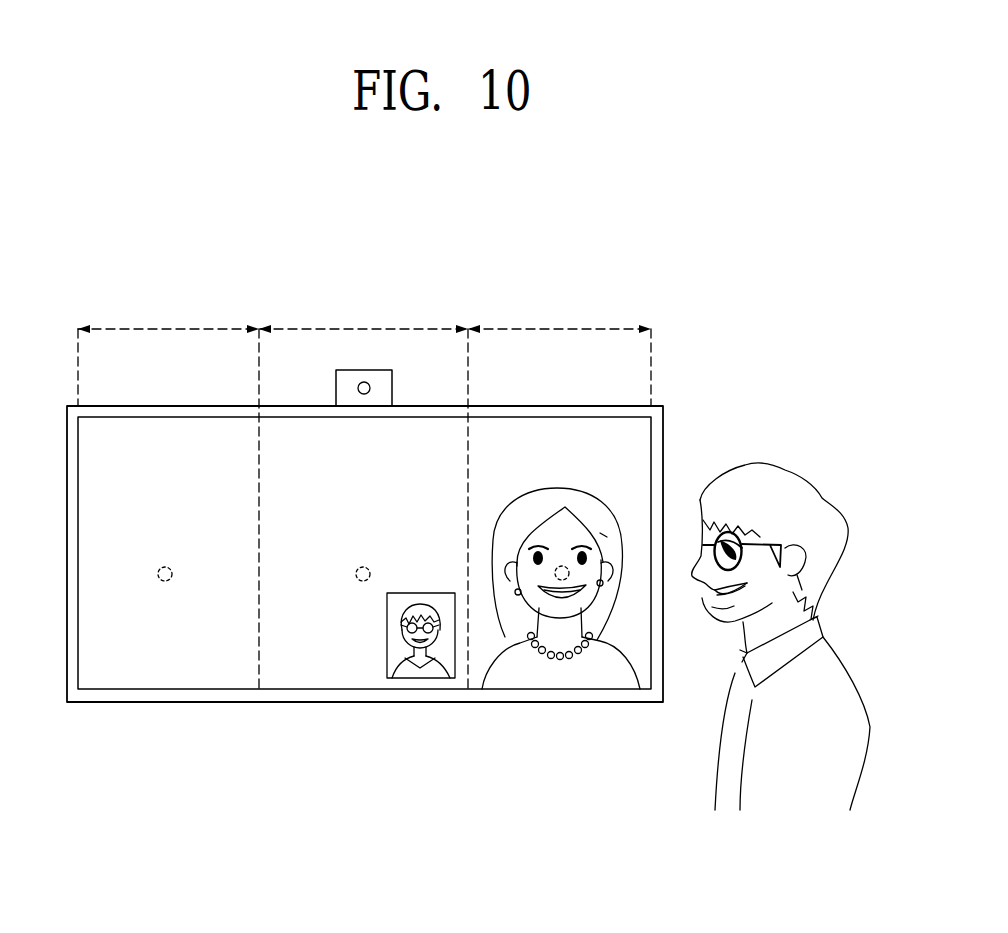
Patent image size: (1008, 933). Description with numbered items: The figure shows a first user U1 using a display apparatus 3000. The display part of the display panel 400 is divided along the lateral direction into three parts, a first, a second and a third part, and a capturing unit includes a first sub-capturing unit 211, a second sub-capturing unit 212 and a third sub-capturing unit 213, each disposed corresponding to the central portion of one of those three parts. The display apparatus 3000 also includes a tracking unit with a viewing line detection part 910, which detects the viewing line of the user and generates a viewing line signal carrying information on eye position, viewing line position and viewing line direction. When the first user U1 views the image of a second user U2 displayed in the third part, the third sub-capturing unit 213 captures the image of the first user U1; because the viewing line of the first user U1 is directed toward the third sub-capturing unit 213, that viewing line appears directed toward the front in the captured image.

The display apparatus 3000 is at (691, 231).
The display panel 400 is at (321, 702).
The viewing line detection part 910 is at (363, 370).
The first sub-capturing unit 211 is at (165, 566).
The second sub-capturing unit 212 is at (363, 566).
The third sub-capturing unit 213 is at (555, 573).
The first user U1 is at (783, 468).
The second user U2 is at (497, 523).